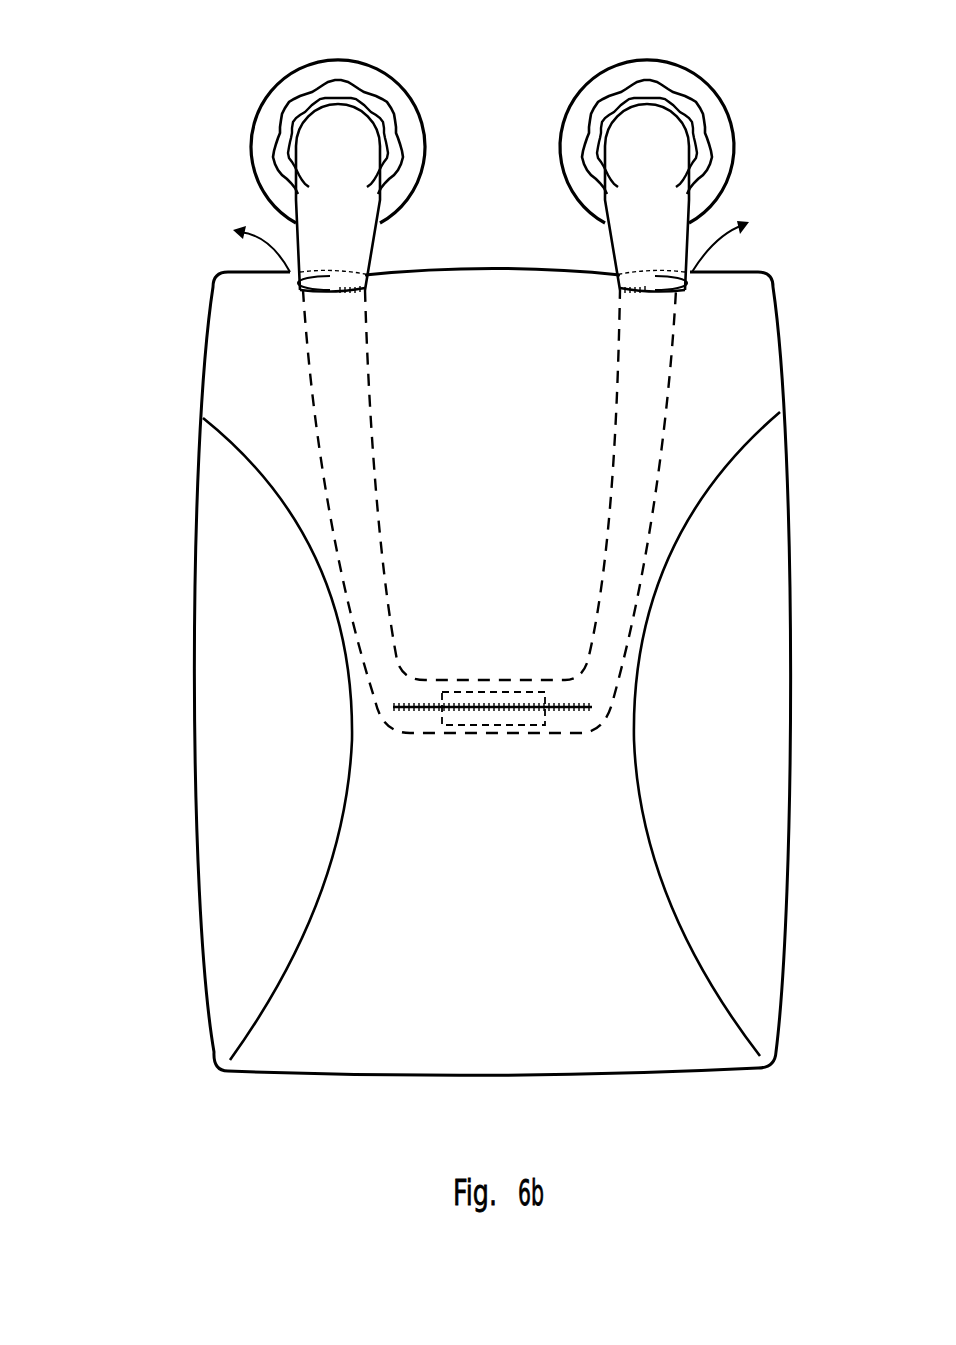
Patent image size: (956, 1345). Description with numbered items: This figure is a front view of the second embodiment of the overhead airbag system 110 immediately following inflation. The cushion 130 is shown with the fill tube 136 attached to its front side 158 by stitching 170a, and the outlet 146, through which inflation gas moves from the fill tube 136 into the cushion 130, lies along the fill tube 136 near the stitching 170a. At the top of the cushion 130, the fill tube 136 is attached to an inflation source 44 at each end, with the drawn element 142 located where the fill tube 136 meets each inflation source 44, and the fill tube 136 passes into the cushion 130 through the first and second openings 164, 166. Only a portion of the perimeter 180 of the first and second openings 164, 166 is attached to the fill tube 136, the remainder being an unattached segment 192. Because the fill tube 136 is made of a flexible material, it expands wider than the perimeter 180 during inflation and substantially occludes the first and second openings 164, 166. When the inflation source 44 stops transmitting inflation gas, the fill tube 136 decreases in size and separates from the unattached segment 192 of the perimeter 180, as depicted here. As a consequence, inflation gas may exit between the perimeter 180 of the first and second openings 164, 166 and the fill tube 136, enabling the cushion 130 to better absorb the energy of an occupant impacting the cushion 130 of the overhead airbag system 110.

The overhead airbag system 110 is at (428, 632).
The cushion 130 is at (509, 933).
The front side 158 is at (593, 802).
The inflation source 44 is at (322, 75).
The shoulder strap 142 is at (310, 128).
The fill tube 136 is at (623, 248).
The second opening 166 is at (293, 292).
The first opening 164 is at (686, 294).
The perimeter 180 is at (327, 292).
The unattached segment 192 is at (302, 295).
The outlet 146 is at (493, 690).
The stitching 170a is at (418, 722).